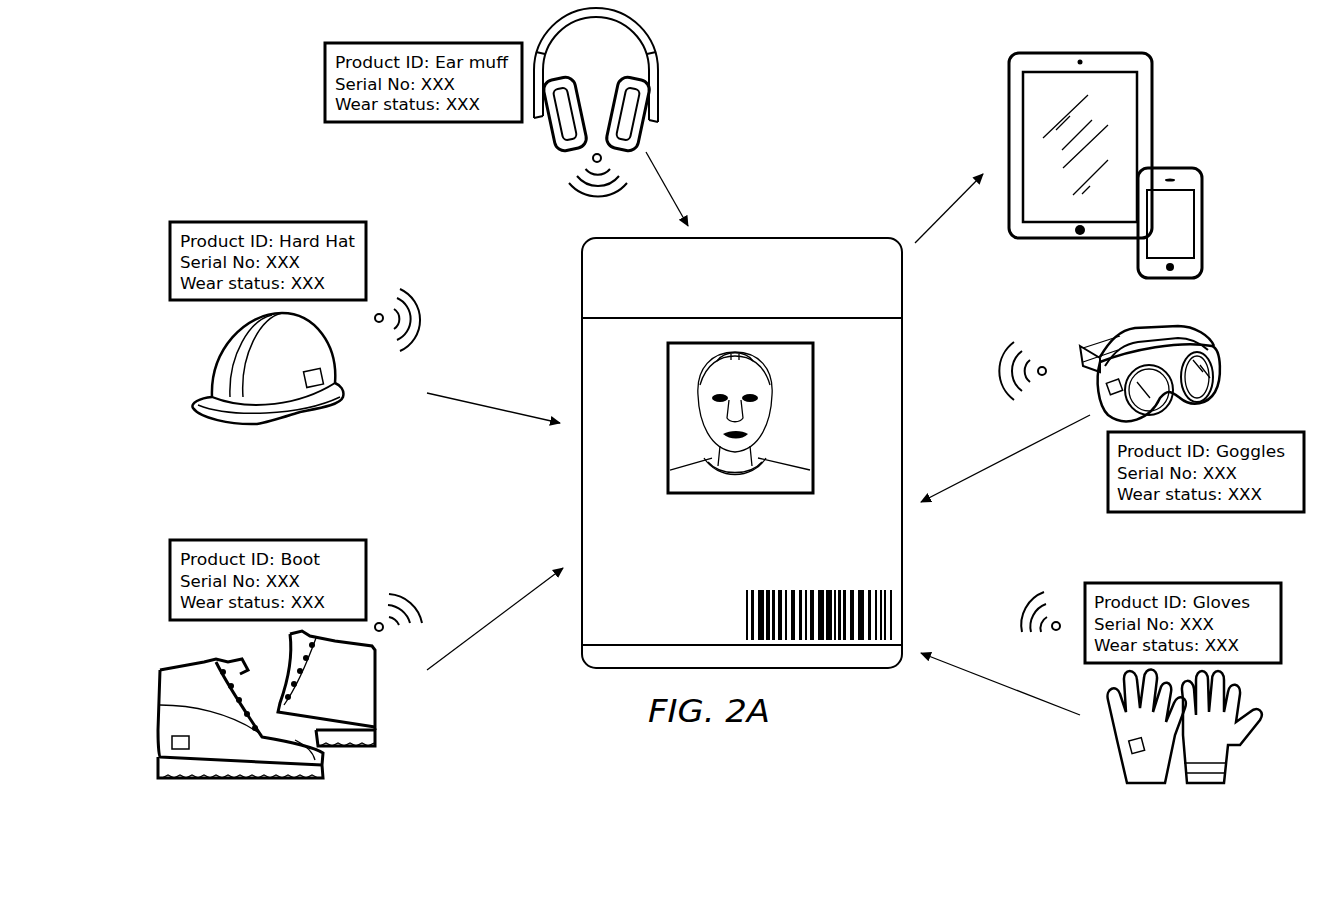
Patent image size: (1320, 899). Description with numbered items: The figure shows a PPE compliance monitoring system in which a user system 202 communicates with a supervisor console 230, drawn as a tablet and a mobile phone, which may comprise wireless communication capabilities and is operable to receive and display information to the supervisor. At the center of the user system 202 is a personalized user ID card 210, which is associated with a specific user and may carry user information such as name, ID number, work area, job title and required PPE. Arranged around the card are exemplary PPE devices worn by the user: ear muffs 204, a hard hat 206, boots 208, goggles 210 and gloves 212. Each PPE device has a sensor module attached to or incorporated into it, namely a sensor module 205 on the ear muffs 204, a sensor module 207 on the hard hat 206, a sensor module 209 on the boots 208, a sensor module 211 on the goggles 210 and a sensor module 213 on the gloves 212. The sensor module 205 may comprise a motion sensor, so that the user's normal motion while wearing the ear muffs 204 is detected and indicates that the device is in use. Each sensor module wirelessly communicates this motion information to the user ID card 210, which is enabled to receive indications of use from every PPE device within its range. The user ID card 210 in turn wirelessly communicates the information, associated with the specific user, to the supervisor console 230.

The user system 202 is at (198, 90).
The ear muffs 204 is at (645, 26).
The sensor module 205 is at (648, 122).
The hard hat 206 is at (222, 424).
The sensor module 207 is at (323, 378).
The boots 208 is at (376, 700).
The sensor module 209 is at (170, 745).
The user ID card 210 is at (748, 240).
The sensor module 211 is at (1104, 393).
The gloves 212 is at (1240, 746).
The sensor module 213 is at (1128, 749).
The supervisor console 230 is at (1153, 116).